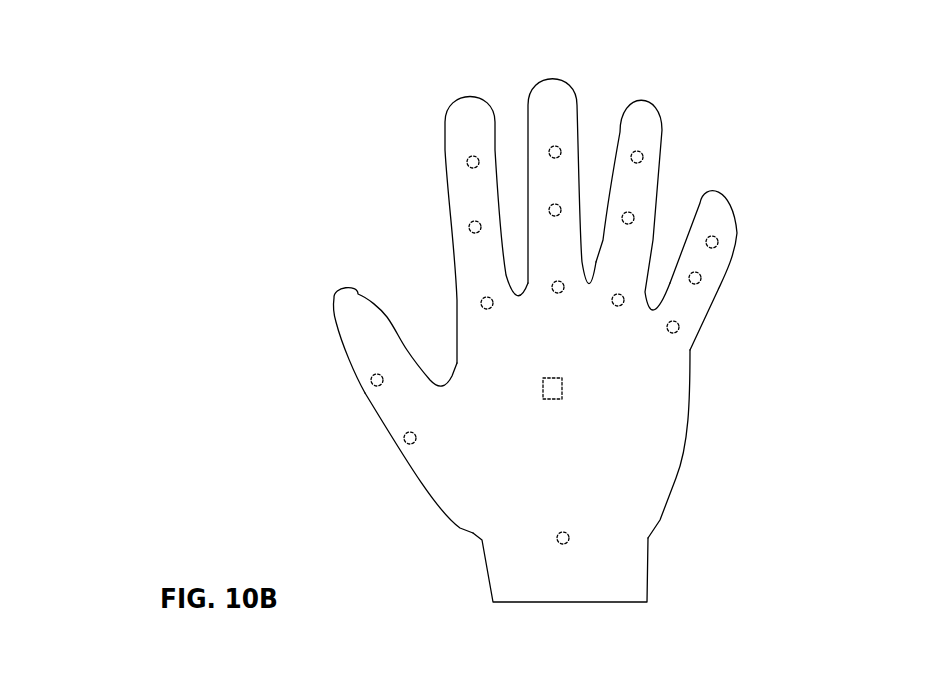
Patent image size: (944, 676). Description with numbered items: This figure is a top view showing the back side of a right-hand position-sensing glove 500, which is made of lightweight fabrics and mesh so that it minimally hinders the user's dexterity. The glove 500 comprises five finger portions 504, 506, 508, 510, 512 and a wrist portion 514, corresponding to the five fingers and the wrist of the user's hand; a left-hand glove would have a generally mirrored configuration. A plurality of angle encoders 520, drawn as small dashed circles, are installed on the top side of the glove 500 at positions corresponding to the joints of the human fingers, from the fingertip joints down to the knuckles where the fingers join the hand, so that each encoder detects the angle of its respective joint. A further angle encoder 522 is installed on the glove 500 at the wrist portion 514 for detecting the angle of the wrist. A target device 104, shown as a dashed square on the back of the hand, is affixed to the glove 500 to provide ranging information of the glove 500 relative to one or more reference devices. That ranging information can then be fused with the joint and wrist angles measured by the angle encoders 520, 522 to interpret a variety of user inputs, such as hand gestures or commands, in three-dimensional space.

The position-sensing glove 500 is at (163, 160).
The finger portion 504 is at (350, 360).
The finger portion 506 is at (445, 150).
The finger portion 508 is at (528, 108).
The finger portion 510 is at (620, 133).
The finger portion 512 is at (737, 238).
The wrist portion 514 is at (635, 585).
The angle encoders 520 is at (553, 286).
The angle encoder 522 is at (567, 538).
The target device 104 is at (552, 398).